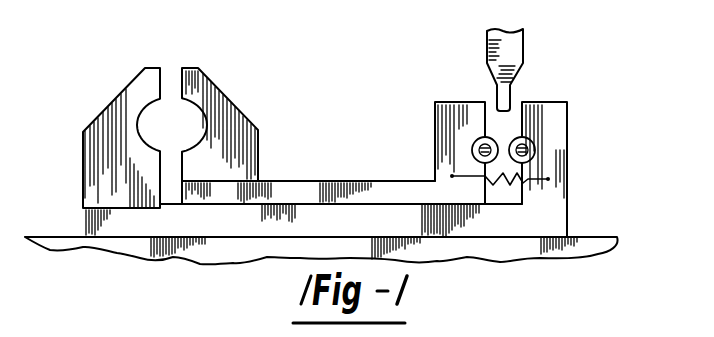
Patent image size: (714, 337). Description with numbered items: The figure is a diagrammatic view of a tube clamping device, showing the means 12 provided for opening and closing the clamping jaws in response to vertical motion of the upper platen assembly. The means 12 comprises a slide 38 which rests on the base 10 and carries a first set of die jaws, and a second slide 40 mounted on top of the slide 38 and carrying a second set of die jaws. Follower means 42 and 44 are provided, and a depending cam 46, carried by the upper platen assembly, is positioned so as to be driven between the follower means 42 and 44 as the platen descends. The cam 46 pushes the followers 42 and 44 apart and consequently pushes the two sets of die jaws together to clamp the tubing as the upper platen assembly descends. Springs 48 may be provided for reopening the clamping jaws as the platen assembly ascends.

The base 10 is at (596, 235).
The means for opening and closing the clamping jaws 12 is at (288, 92).
The slide 38 is at (322, 202).
The slide 40 is at (377, 181).
The follower means 42 is at (497, 140).
The follower means 44 is at (535, 148).
The depending cam 46 is at (523, 56).
The springs 48 is at (501, 185).